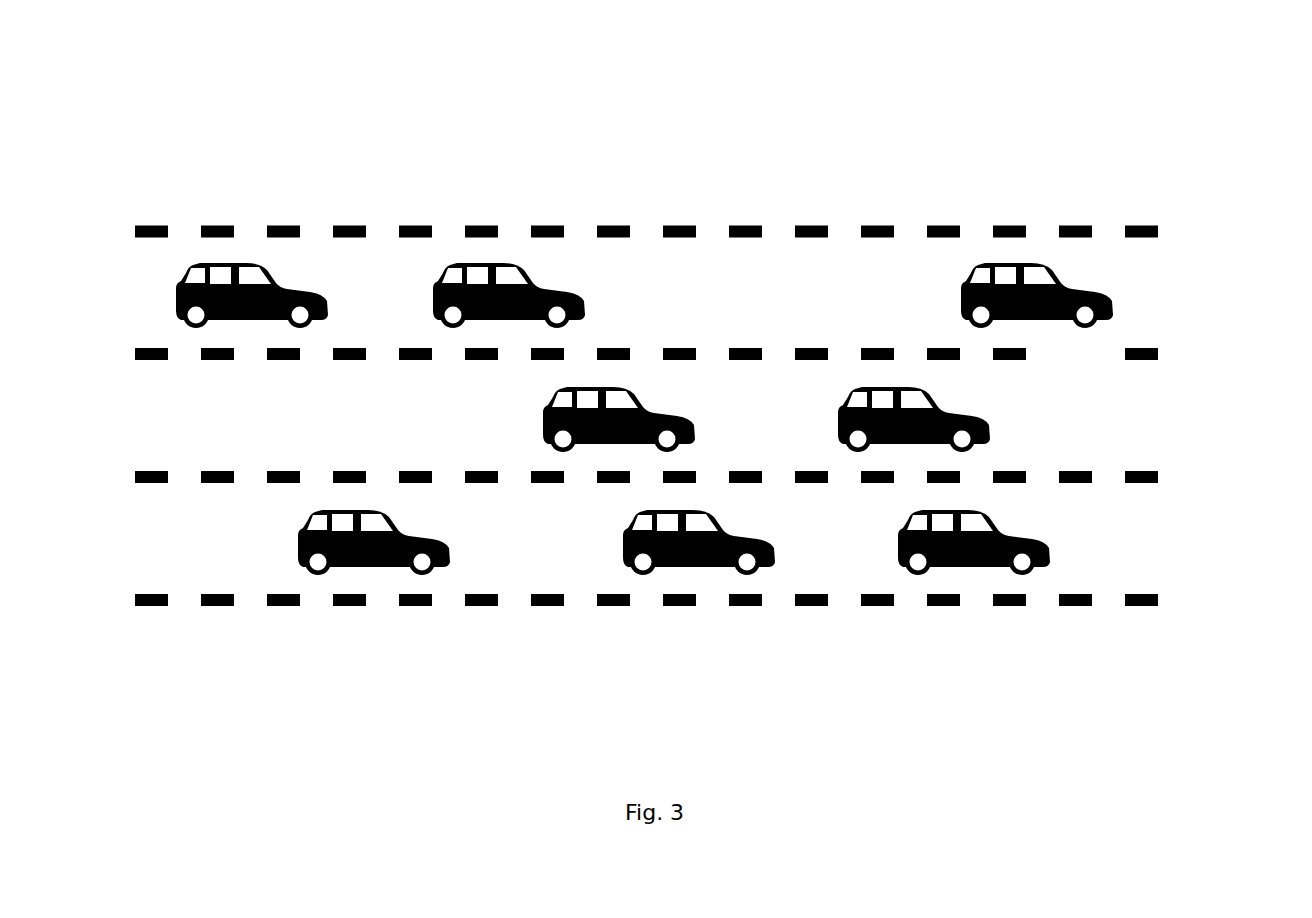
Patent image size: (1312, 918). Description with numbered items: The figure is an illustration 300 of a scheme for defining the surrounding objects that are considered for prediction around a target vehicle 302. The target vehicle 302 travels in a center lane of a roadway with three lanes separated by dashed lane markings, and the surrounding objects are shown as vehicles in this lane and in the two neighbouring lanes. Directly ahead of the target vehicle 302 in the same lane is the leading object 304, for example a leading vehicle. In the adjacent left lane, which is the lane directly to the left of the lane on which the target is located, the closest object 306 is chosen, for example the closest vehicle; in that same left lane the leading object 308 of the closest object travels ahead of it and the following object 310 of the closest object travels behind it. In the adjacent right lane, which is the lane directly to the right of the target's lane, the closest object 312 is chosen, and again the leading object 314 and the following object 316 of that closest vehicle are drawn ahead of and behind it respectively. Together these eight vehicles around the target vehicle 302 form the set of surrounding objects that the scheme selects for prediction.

The illustration 300 is at (1270, 40).
The target vehicle 302 is at (662, 408).
The leading object 304 is at (963, 405).
The closest object in the adjacent left lane 306 is at (533, 298).
The leading object of the closest object in the adjacent left lane 308 is at (1065, 302).
The following object of the closest object in the adjacent left lane 310 is at (270, 295).
The closest object in the adjacent right lane 312 is at (677, 567).
The leading object of the closest vehicle in the adjacent right lane 314 is at (952, 565).
The following object of the closest vehicle in the adjacent right lane 316 is at (347, 565).